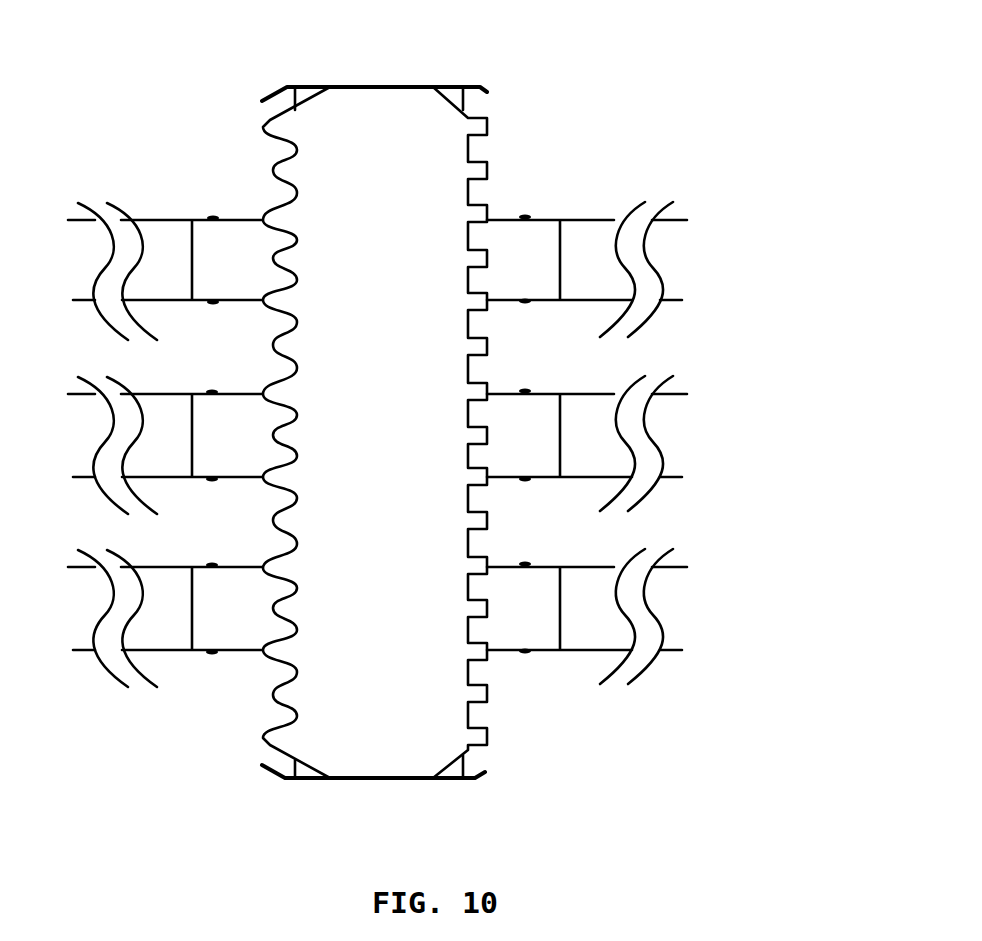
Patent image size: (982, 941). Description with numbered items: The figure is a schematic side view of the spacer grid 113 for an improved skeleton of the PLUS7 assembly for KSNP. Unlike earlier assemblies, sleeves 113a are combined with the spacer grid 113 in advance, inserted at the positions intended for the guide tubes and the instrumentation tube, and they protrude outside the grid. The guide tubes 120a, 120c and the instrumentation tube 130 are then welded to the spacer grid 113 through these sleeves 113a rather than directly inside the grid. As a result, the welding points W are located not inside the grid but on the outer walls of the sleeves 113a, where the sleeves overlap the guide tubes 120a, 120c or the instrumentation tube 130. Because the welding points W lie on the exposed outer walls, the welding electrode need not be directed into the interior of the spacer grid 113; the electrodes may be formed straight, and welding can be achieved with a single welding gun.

The spacer grid 113 is at (558, 67).
The sleeve 113a is at (538, 217).
The guide tube 120c is at (617, 218).
The instrumentation tube 130 is at (613, 390).
The guide tube 120a is at (607, 567).
The welding point W is at (210, 217).